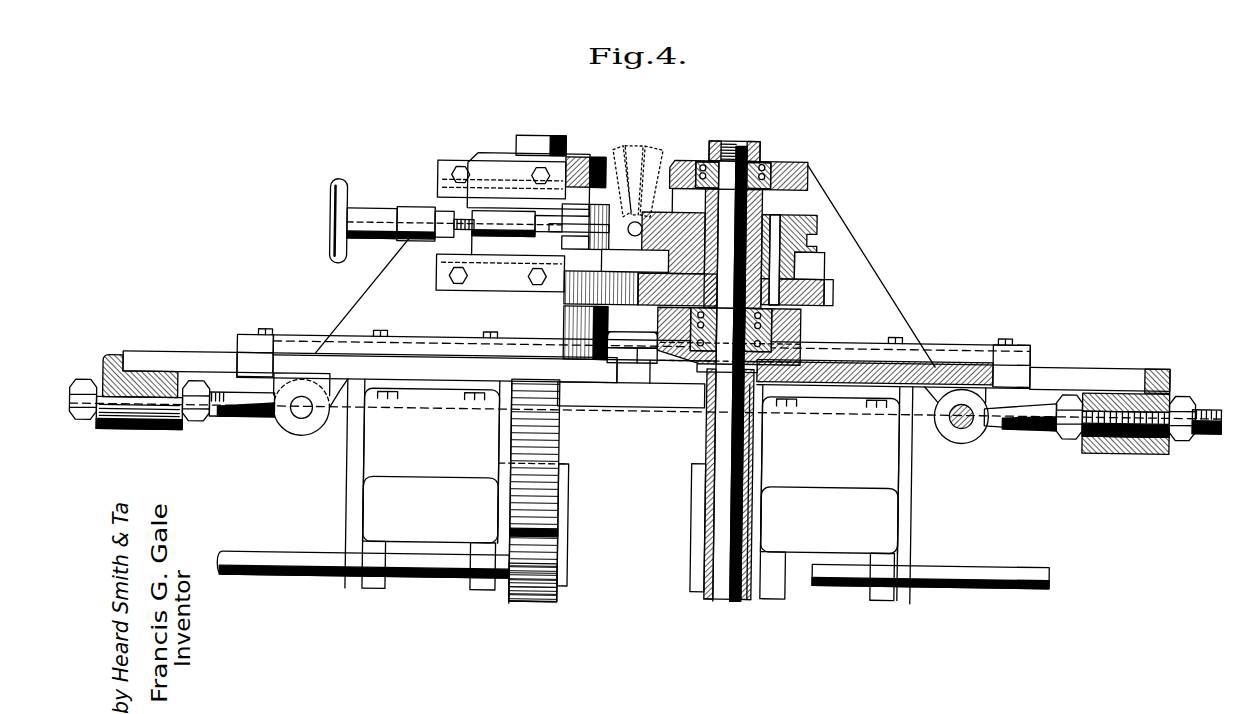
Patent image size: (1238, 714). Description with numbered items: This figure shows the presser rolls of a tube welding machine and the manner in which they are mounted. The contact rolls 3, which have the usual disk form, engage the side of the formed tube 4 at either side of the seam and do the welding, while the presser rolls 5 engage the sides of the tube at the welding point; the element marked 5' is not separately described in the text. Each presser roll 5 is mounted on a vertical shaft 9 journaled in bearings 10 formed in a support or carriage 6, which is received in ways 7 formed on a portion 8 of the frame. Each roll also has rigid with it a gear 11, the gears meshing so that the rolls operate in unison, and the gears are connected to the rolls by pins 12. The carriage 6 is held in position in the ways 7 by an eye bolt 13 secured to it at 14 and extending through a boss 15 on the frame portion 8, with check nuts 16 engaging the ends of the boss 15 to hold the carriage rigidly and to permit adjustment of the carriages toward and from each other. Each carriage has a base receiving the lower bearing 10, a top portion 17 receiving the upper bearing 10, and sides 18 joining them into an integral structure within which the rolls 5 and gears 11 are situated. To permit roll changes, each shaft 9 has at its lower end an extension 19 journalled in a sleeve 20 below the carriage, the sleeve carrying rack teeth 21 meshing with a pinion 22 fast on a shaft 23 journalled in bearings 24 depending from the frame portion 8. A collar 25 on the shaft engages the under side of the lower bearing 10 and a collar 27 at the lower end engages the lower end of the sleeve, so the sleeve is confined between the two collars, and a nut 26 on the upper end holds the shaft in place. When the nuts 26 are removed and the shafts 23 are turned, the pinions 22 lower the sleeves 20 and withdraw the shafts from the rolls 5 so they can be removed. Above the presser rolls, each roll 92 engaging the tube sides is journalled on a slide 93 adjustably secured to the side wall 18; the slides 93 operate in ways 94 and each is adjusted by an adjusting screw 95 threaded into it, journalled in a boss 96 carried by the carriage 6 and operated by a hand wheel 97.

The contact rolls 3 is at (650, 146).
The formed tube 4 is at (640, 243).
The presser rolls 5 is at (673, 231).
The guide ball 5' is at (623, 248).
The carriage 6 is at (372, 304).
The ways 7 is at (248, 360).
The frame portion 8 is at (120, 362).
The vertical shaft 9 is at (752, 205).
The bearings 10 is at (762, 160).
The gear 11 is at (565, 297).
The pins 12 is at (805, 262).
The eye bolt 13 is at (238, 424).
The securing point 14 is at (964, 424).
The boss 15 is at (152, 437).
The check nuts 16 is at (84, 430).
The top portion 17 is at (795, 163).
The sides 18 is at (810, 190).
The extension 19 is at (728, 480).
The sleeve 20 is at (708, 442).
The rack teeth 21 is at (552, 448).
The pinion 22 is at (540, 606).
The shaft 23 is at (315, 582).
The bearings 24 is at (500, 512).
The collar 25 is at (716, 378).
The nut 26 is at (712, 142).
The collar 27 is at (716, 600).
The rolls 92 is at (548, 234).
The slide 93 is at (502, 207).
The ways 94 is at (441, 186).
The adjusting screw 95 is at (450, 220).
The boss 96 is at (402, 212).
The hand wheel 97 is at (328, 222).